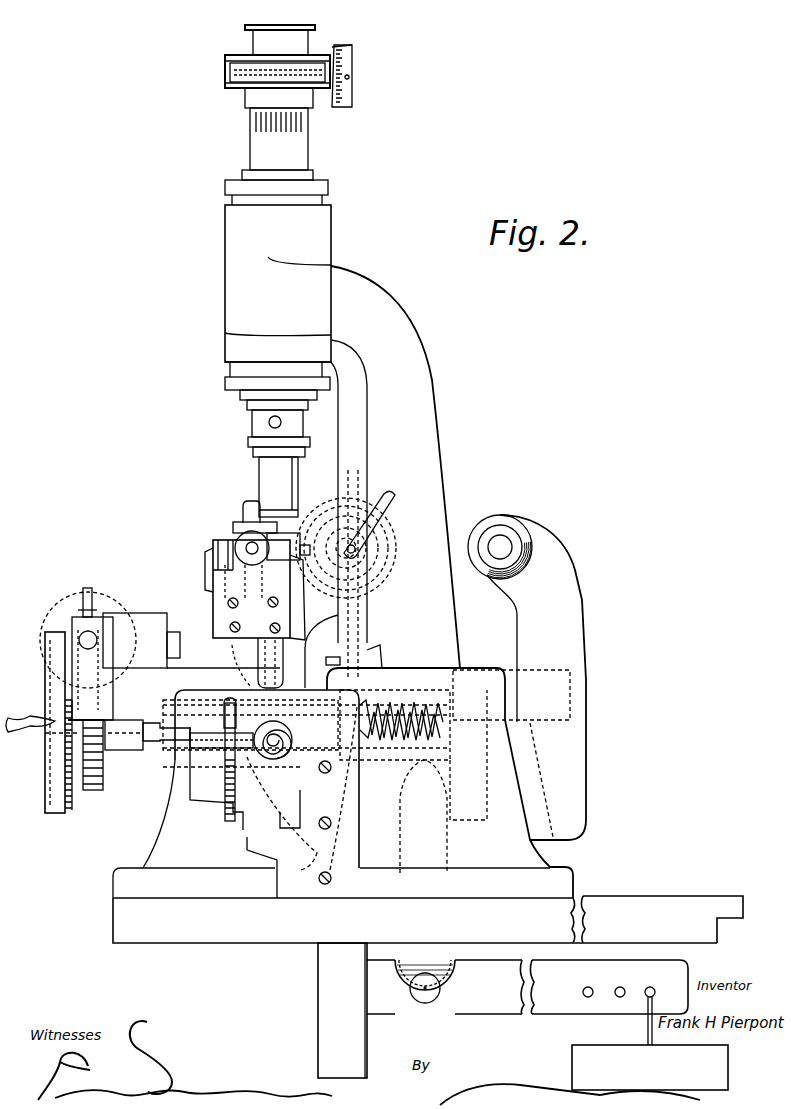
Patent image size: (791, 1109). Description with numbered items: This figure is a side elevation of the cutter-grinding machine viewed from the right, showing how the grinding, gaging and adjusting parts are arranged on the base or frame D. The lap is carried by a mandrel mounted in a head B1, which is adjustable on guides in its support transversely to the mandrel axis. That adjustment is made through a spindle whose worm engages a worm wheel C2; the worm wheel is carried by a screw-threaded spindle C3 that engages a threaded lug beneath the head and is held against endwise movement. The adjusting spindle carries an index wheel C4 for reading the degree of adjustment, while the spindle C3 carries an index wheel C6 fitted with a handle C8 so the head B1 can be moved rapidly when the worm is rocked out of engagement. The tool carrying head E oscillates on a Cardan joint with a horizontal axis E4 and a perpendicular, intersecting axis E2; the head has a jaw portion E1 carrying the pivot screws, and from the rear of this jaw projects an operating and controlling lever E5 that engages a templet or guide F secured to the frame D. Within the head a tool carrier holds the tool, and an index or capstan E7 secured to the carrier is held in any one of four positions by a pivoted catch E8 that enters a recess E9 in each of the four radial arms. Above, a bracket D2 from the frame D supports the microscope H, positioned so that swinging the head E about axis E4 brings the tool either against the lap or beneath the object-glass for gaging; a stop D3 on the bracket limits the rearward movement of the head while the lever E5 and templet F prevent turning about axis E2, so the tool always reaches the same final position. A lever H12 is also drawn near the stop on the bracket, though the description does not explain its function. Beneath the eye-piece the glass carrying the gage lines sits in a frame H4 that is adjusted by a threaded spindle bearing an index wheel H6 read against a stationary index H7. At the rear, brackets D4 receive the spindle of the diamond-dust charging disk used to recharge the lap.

The microscope H is at (292, 155).
The frame H4 is at (239, 57).
The index wheel H6 is at (350, 68).
The stationary index H7 is at (336, 50).
The clamping lever H12 is at (387, 504).
The base or frame D is at (428, 879).
The bracket D2 is at (410, 413).
The stop D3 is at (358, 581).
The brackets D4 is at (565, 604).
The head B1 is at (332, 634).
The worm wheel C2 is at (92, 792).
The screw-threaded spindle C3 is at (400, 692).
The index wheel C4 is at (128, 582).
The index wheel C6 is at (56, 812).
The handle C8 is at (60, 723).
The tool carrying head E is at (185, 769).
The jaw portion E1 is at (252, 672).
The axis E2 is at (278, 688).
The horizontal axis E4 is at (330, 745).
The operating and controlling lever E5 is at (246, 770).
The index or capstan E7 is at (235, 541).
The catch E8 is at (215, 590).
The recess E9 is at (243, 506).
The templet or guide F is at (197, 700).